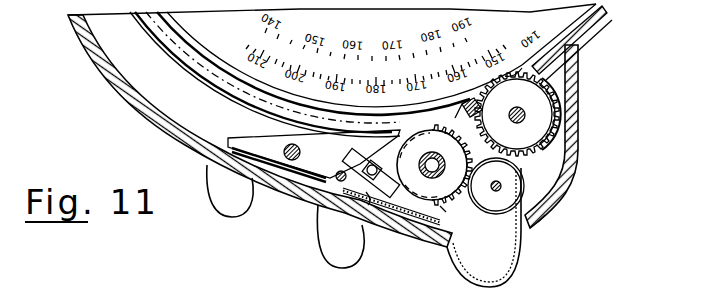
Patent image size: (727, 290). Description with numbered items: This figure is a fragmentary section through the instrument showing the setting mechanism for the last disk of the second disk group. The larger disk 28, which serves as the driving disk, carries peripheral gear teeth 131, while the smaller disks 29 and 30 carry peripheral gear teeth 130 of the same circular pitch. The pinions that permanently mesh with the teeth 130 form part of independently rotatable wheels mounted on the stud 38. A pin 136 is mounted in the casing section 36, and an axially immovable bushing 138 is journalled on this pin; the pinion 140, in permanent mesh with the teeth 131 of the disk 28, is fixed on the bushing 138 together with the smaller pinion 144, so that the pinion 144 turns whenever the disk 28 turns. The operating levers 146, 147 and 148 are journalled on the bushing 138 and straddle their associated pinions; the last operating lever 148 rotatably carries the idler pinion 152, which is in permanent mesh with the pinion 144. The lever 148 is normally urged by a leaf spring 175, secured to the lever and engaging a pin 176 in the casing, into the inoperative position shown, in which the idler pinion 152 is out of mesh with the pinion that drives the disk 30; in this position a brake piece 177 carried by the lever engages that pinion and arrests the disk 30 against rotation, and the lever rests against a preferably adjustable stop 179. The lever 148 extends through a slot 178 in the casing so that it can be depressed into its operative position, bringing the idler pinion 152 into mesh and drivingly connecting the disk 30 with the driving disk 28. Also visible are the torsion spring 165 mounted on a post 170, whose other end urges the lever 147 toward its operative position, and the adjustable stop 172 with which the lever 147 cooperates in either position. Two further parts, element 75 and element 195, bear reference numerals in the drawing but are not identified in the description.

The disk 28 is at (594, 21).
The disk 29 is at (590, 37).
The disk 30 is at (568, 48).
The casing section 36 is at (137, 92).
The stud 38 is at (522, 110).
The casing wall 75 is at (553, 90).
The peripheral gear teeth 130 is at (521, 66).
The peripheral gear teeth 131 is at (370, 163).
The pin 136 is at (447, 156).
The bushing 138 is at (432, 165).
The pinion 140 is at (392, 170).
The pinion 144 is at (447, 207).
The operating lever 146 is at (233, 137).
The operating lever 147 is at (357, 252).
The operating lever 148 is at (505, 255).
The idler pinion 152 is at (512, 186).
The torsion spring 165 is at (318, 168).
The post 170 is at (284, 152).
The adjustable stop 172 is at (341, 181).
The spring 175 is at (388, 202).
The pin 176 is at (365, 196).
The brake piece 177 is at (468, 103).
The slot 178 is at (528, 217).
The adjustable stop 179 is at (426, 168).
The casing wall 195 is at (542, 122).